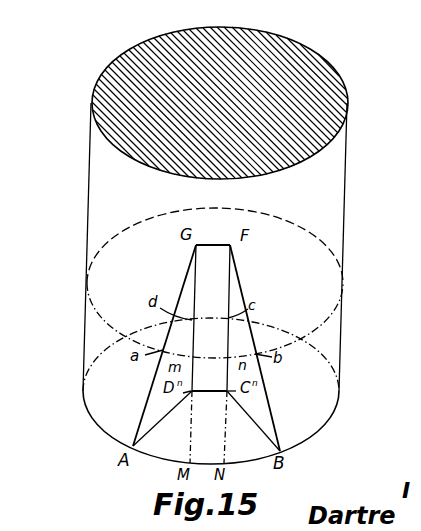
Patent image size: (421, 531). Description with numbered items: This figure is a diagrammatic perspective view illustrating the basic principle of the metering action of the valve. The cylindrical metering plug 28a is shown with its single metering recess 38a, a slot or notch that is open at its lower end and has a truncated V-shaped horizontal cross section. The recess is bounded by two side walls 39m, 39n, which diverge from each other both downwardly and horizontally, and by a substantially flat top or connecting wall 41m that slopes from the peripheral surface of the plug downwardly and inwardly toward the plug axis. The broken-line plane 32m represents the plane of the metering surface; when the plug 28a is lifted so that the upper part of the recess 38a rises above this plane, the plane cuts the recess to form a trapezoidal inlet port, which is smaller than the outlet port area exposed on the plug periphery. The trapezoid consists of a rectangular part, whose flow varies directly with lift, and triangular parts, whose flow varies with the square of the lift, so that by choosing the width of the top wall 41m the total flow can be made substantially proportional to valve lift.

The metering plug 28a is at (333, 198).
The plane of the metering surface 32m is at (273, 350).
The metering recess 38a is at (167, 448).
The top wall of the recess 41m is at (250, 204).
The side wall of the recess 39m is at (155, 408).
The side wall of the recess 39n is at (259, 402).